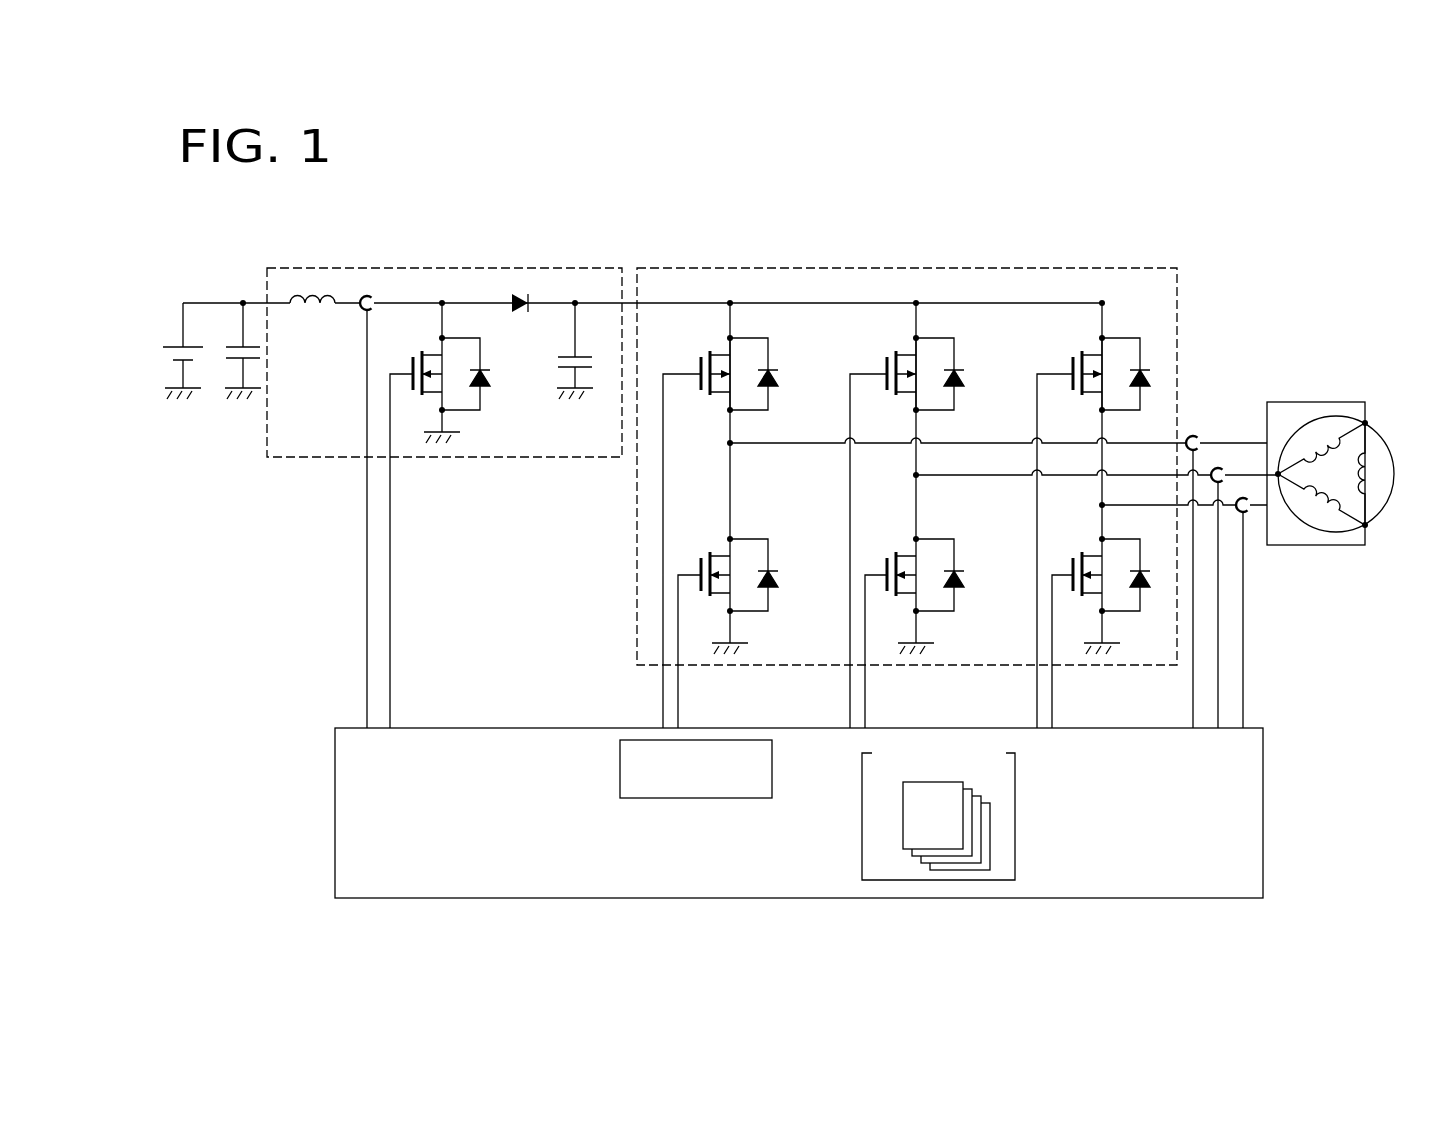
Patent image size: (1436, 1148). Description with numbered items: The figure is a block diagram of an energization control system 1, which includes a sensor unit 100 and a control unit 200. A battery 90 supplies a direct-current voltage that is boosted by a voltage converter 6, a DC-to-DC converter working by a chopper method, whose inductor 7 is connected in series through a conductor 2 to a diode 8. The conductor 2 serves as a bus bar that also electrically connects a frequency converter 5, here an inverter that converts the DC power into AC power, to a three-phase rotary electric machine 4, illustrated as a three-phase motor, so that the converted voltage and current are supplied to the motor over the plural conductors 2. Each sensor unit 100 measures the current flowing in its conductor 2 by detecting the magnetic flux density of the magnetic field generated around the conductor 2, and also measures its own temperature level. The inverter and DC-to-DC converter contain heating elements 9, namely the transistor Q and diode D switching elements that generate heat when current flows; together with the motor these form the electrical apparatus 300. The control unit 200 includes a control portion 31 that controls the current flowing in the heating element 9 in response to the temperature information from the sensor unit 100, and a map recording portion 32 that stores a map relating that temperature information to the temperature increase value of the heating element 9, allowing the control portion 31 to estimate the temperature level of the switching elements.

The energization control system 1 is at (1165, 255).
The conductor 2 is at (405, 300).
The three-phase rotary electric machine 4 is at (1385, 427).
The frequency converter 5 is at (793, 267).
The voltage converter 6 is at (556, 267).
The inductor 7 is at (312, 290).
The diode 8 is at (515, 293).
The heating element 9 is at (485, 389).
The control portion 31 is at (697, 798).
The map recording portion 32 is at (1015, 795).
The battery 90 is at (175, 338).
The sensor unit 100 is at (370, 290).
The control unit 200 is at (335, 812).
The electrical apparatus 300 is at (830, 429).